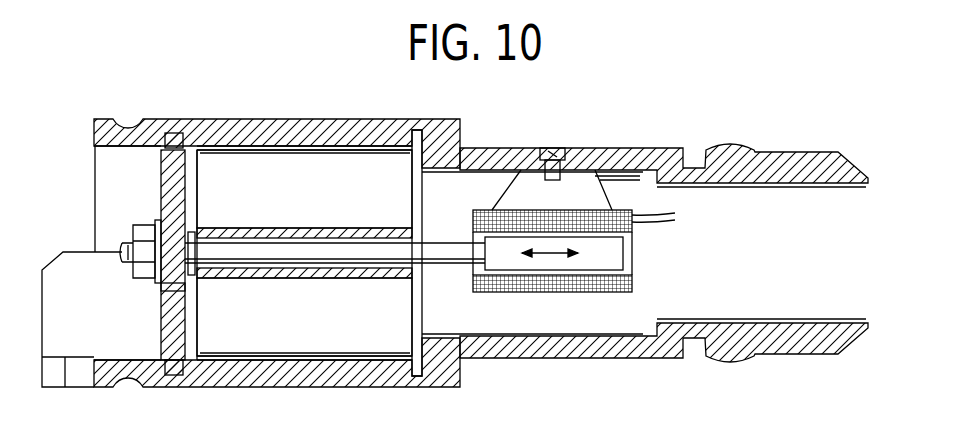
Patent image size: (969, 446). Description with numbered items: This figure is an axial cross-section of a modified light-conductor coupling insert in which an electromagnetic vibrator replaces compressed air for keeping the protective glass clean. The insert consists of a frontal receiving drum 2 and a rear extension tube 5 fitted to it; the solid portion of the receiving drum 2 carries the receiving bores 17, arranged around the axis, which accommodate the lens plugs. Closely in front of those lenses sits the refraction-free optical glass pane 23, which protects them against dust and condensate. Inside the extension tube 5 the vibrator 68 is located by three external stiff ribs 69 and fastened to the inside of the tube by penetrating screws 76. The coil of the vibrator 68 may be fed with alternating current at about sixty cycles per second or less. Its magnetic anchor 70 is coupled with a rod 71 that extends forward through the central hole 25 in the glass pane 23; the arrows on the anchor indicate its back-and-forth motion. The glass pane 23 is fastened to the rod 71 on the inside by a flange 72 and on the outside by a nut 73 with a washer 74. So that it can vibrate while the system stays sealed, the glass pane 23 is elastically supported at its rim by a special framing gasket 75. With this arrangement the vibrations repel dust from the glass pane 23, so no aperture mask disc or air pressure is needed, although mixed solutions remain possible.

The receiving drum 2 is at (270, 120).
The extension tube 5 is at (629, 152).
The receiving bores 17 is at (311, 203).
The glass pane 23 is at (163, 326).
The central hole 25 is at (163, 283).
The vibrator 68 is at (522, 292).
The external stiff ribs 69 is at (522, 168).
The magnetic anchor 70 is at (610, 266).
The rod 71 is at (462, 243).
The flange 72 is at (192, 276).
The nut 73 is at (137, 228).
The washer 74 is at (158, 222).
The framing gasket 75 is at (178, 374).
The penetrating screws 76 is at (547, 150).